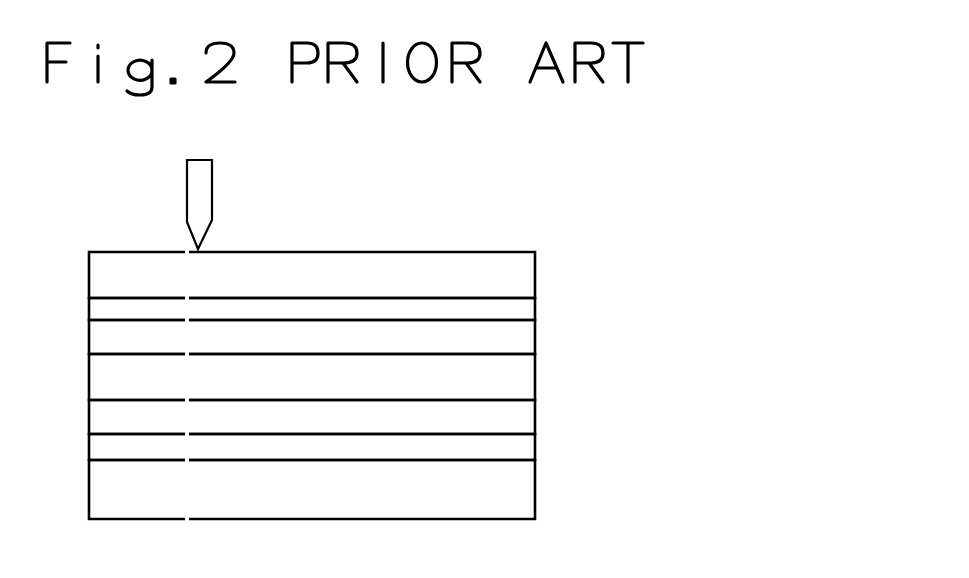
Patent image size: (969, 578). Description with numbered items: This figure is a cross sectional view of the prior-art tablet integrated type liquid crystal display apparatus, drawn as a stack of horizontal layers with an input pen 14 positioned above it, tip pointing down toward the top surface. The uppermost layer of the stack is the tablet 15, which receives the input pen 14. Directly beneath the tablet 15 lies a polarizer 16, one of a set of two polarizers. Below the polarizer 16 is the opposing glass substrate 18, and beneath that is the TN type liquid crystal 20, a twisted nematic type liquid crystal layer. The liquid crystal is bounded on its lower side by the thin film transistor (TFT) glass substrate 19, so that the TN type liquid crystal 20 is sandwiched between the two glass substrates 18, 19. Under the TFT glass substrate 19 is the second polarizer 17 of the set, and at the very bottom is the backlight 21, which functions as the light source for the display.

The input pen 14 is at (212, 183).
The tablet 15 is at (535, 270).
The polarizer 16 is at (535, 305).
The polarizer 17 is at (535, 444).
The opposing glass substrate 18 is at (535, 333).
The thin film transistor (TFT) glass substrate 19 is at (535, 408).
The TN type liquid crystal 20 is at (535, 373).
The backlight 21 is at (535, 490).